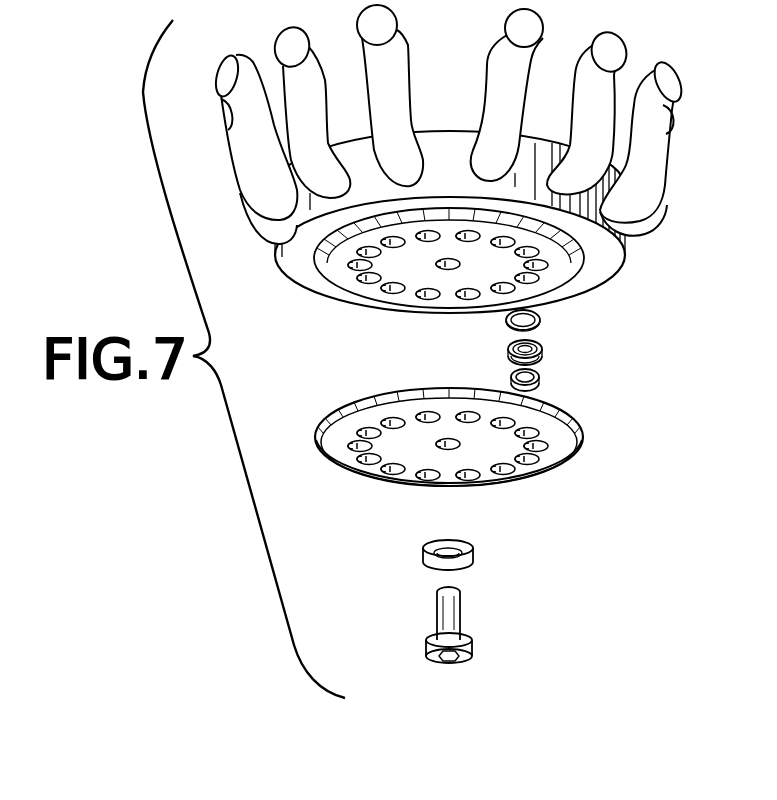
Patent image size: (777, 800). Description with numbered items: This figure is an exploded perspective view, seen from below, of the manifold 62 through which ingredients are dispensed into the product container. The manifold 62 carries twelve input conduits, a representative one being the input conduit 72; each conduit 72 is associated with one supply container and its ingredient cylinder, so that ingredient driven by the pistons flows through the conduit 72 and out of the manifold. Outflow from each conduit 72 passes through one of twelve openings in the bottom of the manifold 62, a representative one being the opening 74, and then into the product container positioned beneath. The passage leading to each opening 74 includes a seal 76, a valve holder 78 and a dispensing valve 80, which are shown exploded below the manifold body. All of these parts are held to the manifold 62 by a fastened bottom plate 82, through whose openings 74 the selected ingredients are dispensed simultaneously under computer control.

The manifold 62 is at (282, 252).
The input conduit 72 is at (245, 143).
The manifold opening 74 is at (530, 432).
The seal 76 is at (542, 325).
The valve holder 78 is at (542, 357).
The dispensing valve 80 is at (542, 380).
The bottom plate 82 is at (508, 463).